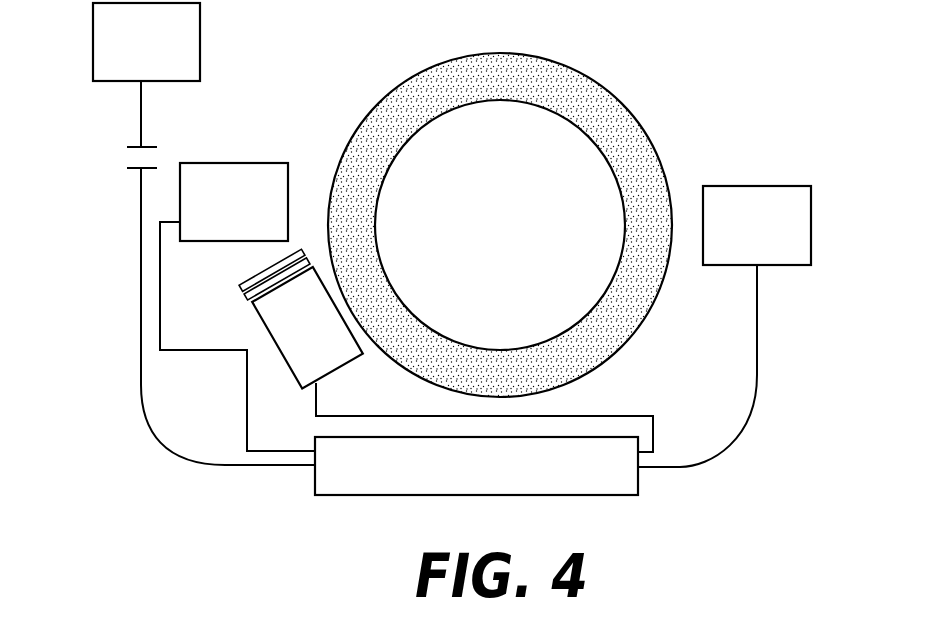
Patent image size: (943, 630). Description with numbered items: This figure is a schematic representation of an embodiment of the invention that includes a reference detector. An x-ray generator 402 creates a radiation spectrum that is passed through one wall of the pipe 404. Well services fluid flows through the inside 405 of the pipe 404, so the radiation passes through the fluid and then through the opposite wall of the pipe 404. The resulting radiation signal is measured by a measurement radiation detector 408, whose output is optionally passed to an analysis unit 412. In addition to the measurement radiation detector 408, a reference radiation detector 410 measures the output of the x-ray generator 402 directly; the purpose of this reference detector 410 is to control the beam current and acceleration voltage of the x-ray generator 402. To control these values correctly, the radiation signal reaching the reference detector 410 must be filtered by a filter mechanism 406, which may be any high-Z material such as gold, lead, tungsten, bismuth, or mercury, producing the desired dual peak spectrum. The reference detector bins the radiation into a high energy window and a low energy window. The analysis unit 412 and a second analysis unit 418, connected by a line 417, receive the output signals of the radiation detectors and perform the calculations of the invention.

The x-ray generator 402 is at (220, 164).
The pipe 404 is at (657, 156).
The inside of the pipe 405 is at (472, 237).
The filter mechanism 406 is at (295, 248).
The measurement radiation detector 408 is at (731, 236).
The reference radiation detector 410 is at (282, 340).
The analysis unit 412 is at (450, 477).
The line 417 is at (141, 303).
The analysis unit 418 is at (120, 56).